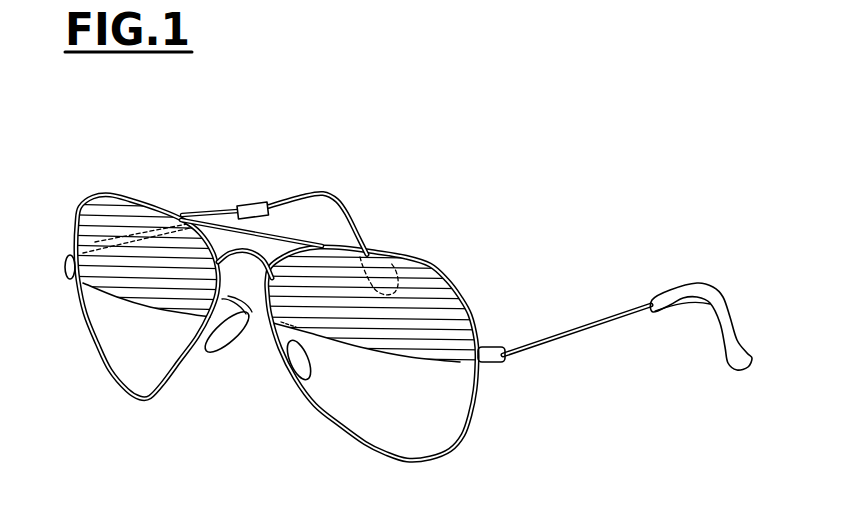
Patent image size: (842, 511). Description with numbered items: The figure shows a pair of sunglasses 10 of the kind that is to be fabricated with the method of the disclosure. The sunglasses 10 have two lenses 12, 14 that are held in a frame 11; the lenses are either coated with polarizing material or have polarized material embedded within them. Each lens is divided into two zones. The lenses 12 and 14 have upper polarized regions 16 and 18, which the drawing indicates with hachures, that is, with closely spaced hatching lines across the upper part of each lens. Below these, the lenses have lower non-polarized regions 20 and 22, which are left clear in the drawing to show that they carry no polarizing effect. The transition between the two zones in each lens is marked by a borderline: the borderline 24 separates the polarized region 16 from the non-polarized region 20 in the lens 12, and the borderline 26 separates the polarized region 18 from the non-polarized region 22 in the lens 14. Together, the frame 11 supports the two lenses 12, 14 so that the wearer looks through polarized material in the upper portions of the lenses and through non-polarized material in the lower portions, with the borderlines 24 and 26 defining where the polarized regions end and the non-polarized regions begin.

The sunglasses 10 is at (402, 300).
The frame 11 is at (470, 320).
The lens 12 is at (147, 295).
The lens 14 is at (395, 351).
The upper polarized region 16 is at (127, 223).
The upper polarized region 18 is at (445, 280).
The lower non-polarized region 20 is at (153, 357).
The lower non-polarized region 22 is at (433, 415).
The borderline 24 is at (183, 308).
The borderline 26 is at (450, 367).